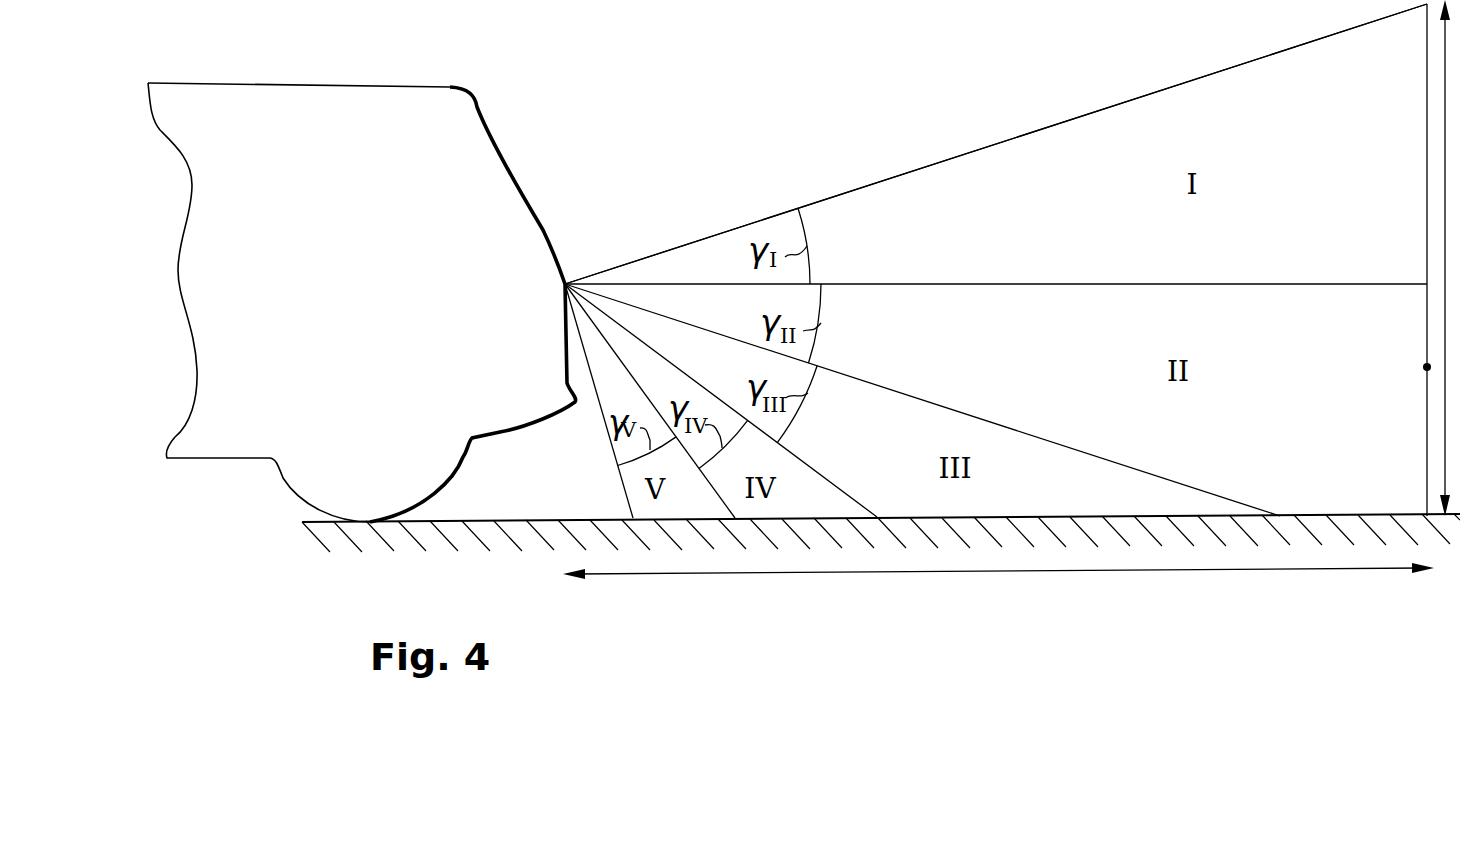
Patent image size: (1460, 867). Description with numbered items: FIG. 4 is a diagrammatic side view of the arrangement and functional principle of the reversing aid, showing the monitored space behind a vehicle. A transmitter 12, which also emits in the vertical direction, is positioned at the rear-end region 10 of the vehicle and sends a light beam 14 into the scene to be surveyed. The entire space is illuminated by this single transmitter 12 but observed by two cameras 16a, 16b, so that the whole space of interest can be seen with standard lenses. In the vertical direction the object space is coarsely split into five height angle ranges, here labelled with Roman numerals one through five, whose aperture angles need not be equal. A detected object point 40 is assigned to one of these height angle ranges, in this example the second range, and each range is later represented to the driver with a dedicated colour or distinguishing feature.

The rear-end region 10 is at (488, 148).
The transmitter 12 is at (996, 261).
The light beam 14 is at (1030, 130).
The camera 16a is at (996, 260).
The camera 16b is at (721, 401).
The detected object point 40 is at (1427, 367).